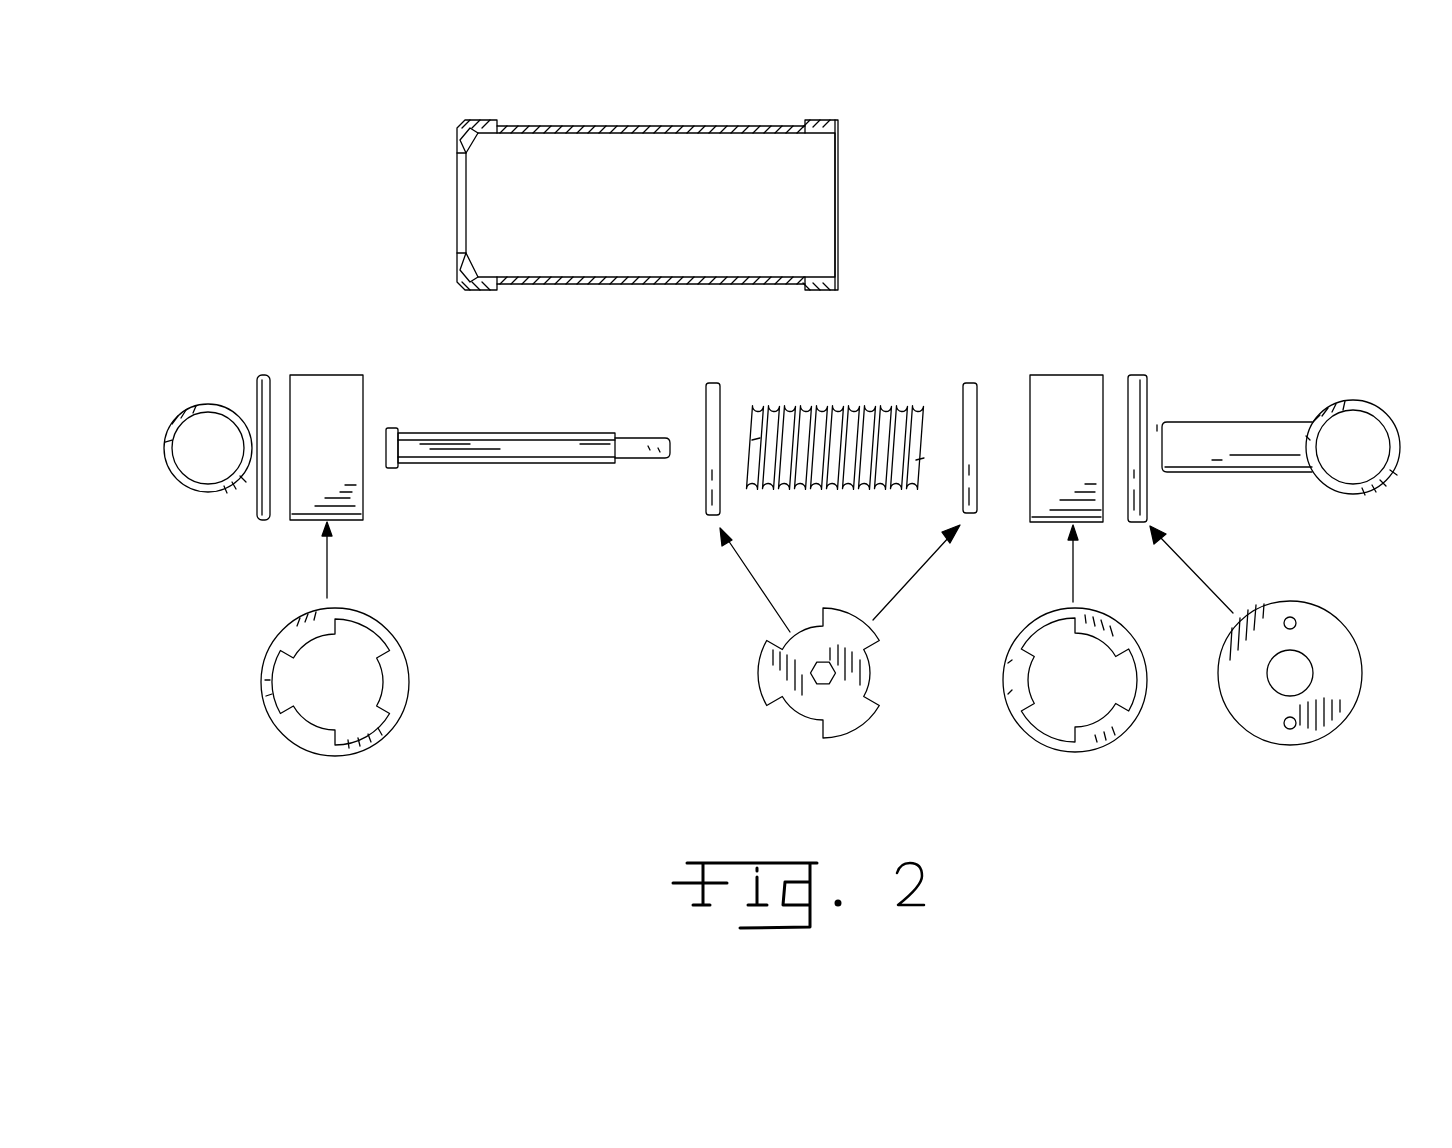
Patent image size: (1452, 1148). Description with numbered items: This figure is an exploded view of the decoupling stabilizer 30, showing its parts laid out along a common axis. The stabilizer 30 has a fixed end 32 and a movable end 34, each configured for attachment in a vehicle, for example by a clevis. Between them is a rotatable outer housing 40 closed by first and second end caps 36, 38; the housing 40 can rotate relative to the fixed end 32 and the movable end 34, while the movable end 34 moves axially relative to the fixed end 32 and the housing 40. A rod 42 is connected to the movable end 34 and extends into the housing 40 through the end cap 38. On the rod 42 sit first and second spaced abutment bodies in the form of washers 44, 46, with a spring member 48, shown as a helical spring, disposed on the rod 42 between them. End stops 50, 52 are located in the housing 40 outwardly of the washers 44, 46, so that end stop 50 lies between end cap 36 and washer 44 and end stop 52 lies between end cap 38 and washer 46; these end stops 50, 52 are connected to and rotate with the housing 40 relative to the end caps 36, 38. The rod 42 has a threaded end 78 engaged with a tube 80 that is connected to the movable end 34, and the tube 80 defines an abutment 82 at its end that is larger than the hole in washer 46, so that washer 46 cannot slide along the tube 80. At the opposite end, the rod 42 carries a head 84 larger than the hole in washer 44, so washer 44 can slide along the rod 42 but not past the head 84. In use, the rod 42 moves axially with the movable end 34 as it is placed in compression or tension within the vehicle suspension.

The decoupling stabilizer 30 is at (366, 180).
The fixed end 32 is at (205, 405).
The movable end 34 is at (1357, 405).
The first end cap 36 is at (260, 382).
The second end cap 38 is at (1138, 380).
The rotatable outer housing 40 is at (644, 127).
The rod 42 is at (492, 437).
The first washer 44 is at (715, 382).
The second washer 46 is at (967, 383).
The spring member 48 is at (808, 400).
The first end stop 50 is at (352, 490).
The second end stop 52 is at (1057, 385).
The threaded end 78 is at (637, 442).
The tube 80 is at (1258, 427).
The abutment 82 is at (1157, 427).
The head 84 is at (390, 427).